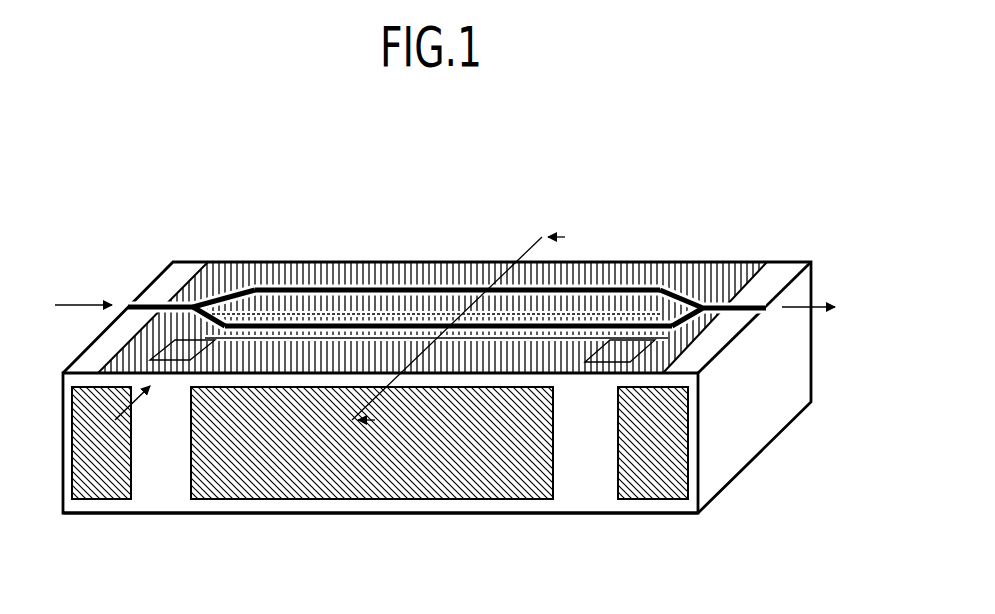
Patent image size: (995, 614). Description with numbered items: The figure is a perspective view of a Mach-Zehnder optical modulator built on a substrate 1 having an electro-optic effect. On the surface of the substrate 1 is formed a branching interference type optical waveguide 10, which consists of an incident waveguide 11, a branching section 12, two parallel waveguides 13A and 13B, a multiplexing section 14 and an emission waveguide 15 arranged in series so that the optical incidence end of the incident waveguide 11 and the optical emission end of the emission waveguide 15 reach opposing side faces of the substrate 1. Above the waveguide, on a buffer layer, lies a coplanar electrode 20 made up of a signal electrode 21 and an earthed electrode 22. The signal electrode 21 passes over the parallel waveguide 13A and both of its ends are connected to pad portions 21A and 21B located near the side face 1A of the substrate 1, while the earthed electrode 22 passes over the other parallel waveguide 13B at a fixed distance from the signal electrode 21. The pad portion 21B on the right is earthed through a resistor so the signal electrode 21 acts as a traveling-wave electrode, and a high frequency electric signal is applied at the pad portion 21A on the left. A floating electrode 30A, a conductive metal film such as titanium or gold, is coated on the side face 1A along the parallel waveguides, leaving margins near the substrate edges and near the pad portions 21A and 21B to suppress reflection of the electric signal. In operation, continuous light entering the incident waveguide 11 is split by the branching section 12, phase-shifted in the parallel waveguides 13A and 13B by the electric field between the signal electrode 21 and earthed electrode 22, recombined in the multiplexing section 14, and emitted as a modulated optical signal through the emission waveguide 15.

The substrate 1 is at (760, 450).
The side face 1A is at (665, 508).
The branching interference type optical waveguide 10 is at (138, 196).
The incident waveguide 11 is at (152, 288).
The branching section 12 is at (196, 295).
The parallel waveguide 13A is at (254, 286).
The parallel waveguide 13B is at (342, 288).
The multiplexing section 14 is at (708, 300).
The emission waveguide 15 is at (792, 283).
The coplanar electrode 20 is at (456, 157).
The signal electrode 21 is at (398, 262).
The pad portion 21A is at (178, 352).
The pad portion 21B is at (600, 360).
The earthed electrode 22 is at (482, 262).
The floating electrode 30A is at (620, 494).